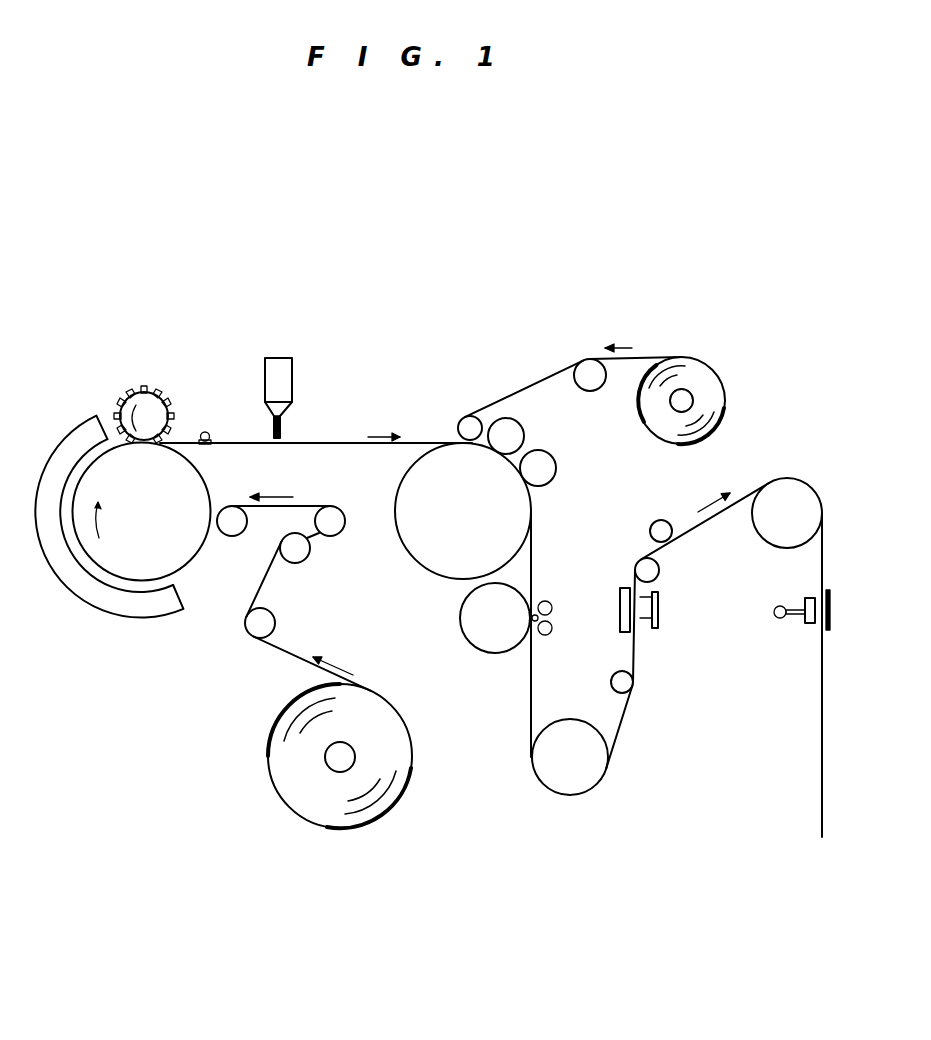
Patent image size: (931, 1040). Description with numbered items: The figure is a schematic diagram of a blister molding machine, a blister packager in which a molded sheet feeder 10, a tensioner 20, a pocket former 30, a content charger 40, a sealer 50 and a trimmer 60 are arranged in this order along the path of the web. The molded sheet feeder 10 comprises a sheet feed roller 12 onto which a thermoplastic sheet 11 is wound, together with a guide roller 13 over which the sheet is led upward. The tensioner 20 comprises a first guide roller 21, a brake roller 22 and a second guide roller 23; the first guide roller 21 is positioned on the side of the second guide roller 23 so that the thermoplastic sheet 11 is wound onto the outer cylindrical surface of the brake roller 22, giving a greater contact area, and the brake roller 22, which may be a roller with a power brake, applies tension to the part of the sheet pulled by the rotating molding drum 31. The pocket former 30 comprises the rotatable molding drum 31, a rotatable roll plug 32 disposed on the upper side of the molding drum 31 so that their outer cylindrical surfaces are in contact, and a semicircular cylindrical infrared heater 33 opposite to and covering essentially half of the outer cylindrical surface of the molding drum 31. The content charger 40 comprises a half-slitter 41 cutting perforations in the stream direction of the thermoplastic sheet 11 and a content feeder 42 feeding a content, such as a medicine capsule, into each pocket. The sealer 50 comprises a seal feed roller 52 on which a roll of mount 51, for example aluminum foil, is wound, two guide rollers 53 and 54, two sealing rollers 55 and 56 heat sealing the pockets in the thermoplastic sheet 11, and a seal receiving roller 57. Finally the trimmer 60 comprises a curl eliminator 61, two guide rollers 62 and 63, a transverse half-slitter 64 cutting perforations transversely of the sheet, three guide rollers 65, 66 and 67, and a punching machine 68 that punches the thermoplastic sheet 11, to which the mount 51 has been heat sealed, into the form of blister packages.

The molded sheet feeder 10 is at (266, 753).
The thermoplastic sheet 11 is at (298, 650).
The sheet feed roller 12 is at (345, 760).
The guide roller 13 is at (257, 628).
The tensioner 20 is at (337, 545).
The first guide roller 21 is at (298, 553).
The brake roller 22 is at (330, 518).
The second guide roller 23 is at (232, 518).
The pocket former 30 is at (192, 562).
The molding drum 31 is at (119, 568).
The roll plug 32 is at (136, 397).
The infrared heater 33 is at (70, 577).
The content charger 40 is at (273, 427).
The half-slitter 41 is at (203, 432).
The content feeder 42 is at (292, 380).
The sealer 50 is at (540, 520).
The mount 51 is at (542, 375).
The seal feed roller 52 is at (688, 400).
The guide roller 53 is at (592, 380).
The guide roller 54 is at (469, 420).
The sealing roller 55 is at (516, 434).
The sealing roller 56 is at (547, 466).
The seal receiving roller 57 is at (420, 548).
The trimmer 60 is at (607, 772).
The curl eliminator 61 is at (492, 653).
The guide roller 62 is at (568, 778).
The guide roller 63 is at (611, 680).
The transverse half-slitter 64 is at (653, 630).
The guide roller 65 is at (655, 568).
The guide roller 66 is at (666, 520).
The guide roller 67 is at (775, 525).
The punching machine 68 is at (780, 620).